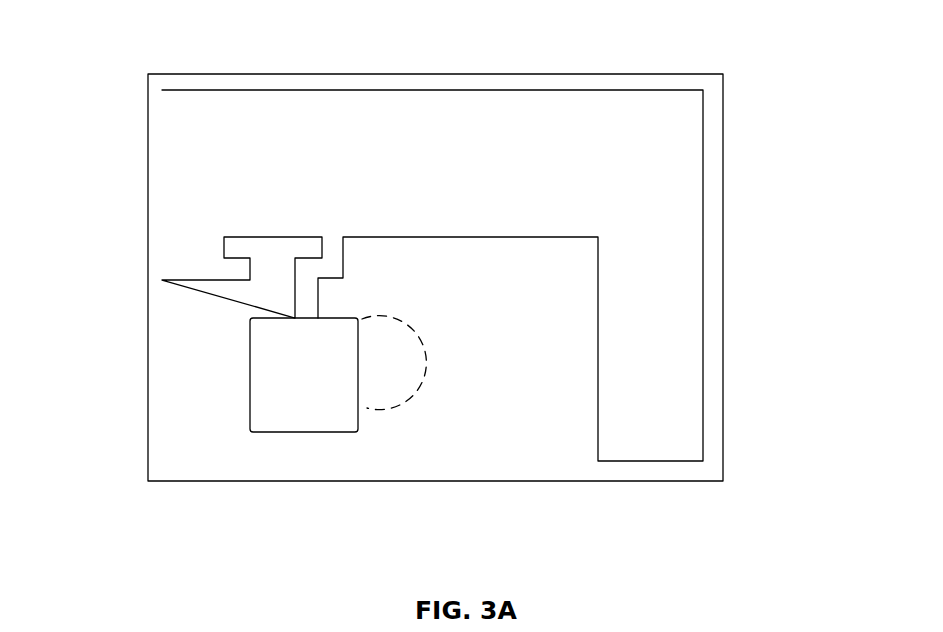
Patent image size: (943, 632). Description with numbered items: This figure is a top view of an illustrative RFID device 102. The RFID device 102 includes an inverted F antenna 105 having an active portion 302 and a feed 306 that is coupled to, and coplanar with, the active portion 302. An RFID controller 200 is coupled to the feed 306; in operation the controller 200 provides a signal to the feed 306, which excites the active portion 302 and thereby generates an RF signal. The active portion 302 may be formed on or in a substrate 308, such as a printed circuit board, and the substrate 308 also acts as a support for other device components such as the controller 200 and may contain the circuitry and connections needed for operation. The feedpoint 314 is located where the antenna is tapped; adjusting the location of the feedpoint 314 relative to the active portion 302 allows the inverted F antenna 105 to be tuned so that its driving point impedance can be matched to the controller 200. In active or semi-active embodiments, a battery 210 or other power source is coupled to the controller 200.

The RFID device 102 is at (118, 141).
The inverted F antenna 105 is at (521, 107).
The RFID controller 200 is at (298, 432).
The battery 210 is at (397, 408).
The active portion 302 is at (669, 149).
The feed 306 is at (344, 272).
The substrate 308 is at (724, 221).
The feedpoint 314 is at (352, 245).